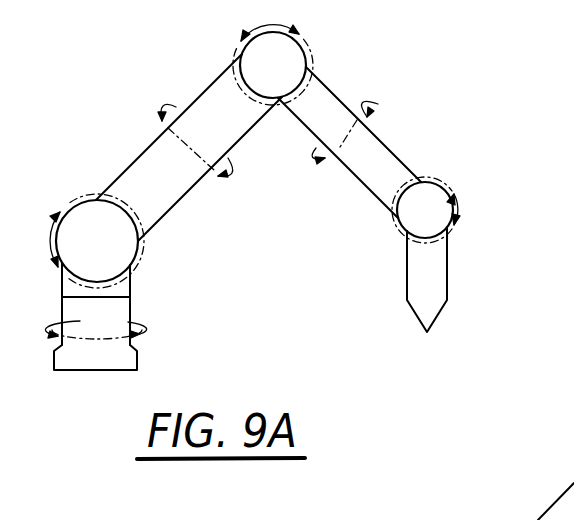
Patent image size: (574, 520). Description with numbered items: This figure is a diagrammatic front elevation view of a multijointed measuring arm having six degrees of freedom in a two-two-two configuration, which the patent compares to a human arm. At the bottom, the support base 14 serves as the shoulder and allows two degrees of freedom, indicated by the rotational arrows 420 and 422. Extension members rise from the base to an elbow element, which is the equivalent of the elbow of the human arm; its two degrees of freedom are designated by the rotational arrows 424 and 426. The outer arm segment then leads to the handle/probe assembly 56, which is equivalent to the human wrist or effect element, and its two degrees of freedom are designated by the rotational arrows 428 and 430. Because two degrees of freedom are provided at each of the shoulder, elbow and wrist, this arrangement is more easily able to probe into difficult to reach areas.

The support base 14 is at (133, 341).
The rotational arrow 420 is at (140, 330).
The rotational arrow 422 is at (145, 253).
The rotational arrow 424 is at (229, 182).
The rotational arrow 426 is at (318, 52).
The rotational arrow 428 is at (370, 108).
The rotational arrow 430 is at (397, 230).
The handle/probe assembly 56 is at (406, 288).